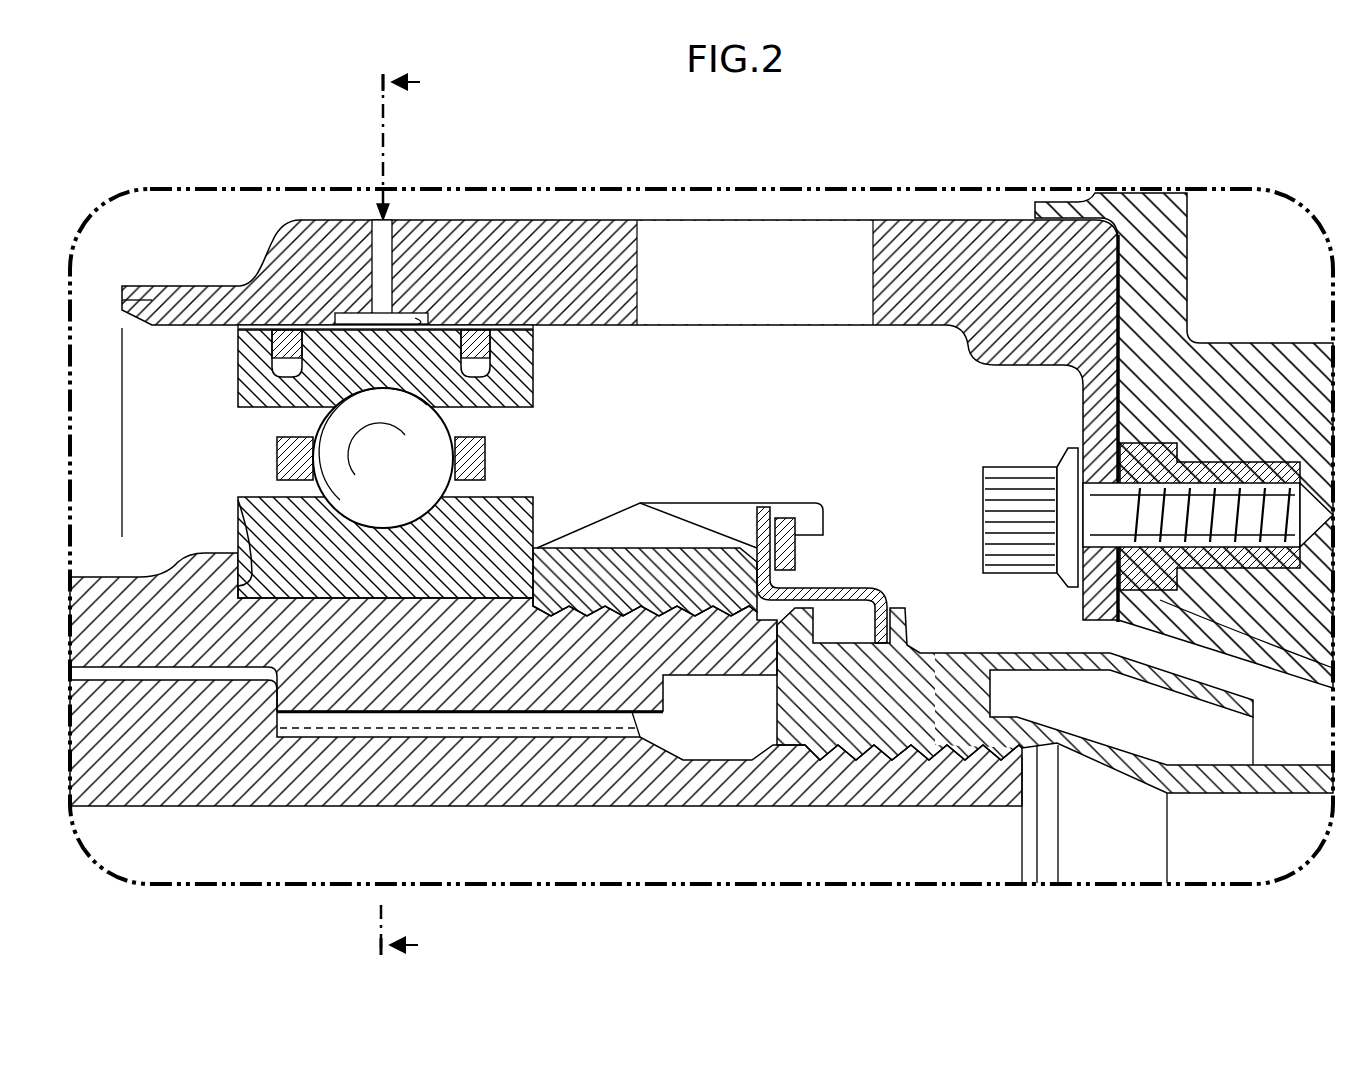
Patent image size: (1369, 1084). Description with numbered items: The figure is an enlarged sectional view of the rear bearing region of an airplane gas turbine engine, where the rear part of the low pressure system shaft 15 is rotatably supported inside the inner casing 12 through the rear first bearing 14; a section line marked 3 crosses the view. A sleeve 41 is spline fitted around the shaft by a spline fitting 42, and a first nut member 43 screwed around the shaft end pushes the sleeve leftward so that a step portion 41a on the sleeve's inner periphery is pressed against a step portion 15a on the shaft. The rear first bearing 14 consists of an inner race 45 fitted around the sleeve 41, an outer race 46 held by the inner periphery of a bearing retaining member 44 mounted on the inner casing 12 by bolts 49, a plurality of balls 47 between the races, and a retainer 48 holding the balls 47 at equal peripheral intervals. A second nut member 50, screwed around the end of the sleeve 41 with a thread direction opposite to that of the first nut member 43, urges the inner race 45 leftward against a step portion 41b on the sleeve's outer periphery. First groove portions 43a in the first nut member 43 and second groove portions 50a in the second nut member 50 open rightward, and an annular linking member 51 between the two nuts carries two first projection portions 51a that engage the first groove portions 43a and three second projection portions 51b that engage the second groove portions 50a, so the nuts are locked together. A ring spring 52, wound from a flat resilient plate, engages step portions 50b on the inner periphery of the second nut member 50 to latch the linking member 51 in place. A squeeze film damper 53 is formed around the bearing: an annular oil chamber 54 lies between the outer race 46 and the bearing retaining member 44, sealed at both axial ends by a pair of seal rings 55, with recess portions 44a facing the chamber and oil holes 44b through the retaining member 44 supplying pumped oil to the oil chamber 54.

The section line III-III 3 is at (414, 516).
The inner casing 12 is at (1175, 292).
The rear first bearing 14 is at (421, 371).
The low pressure system shaft 15 is at (528, 814).
The step portion 15a is at (278, 697).
The sleeve 41 is at (138, 574).
The step portion 41a is at (272, 698).
The step portion 41b is at (252, 545).
The spline fitting 42 is at (452, 718).
The first nut member 43 is at (962, 650).
The first groove portions 43a is at (773, 660).
The bearing retaining member 44 is at (542, 212).
The recess portions 44a is at (436, 312).
The oil holes 44b is at (388, 262).
The inner race 45 is at (512, 545).
The outer race 46 is at (515, 390).
The balls 47 is at (394, 476).
The retainer 48 is at (283, 456).
The bolts 49 is at (1010, 478).
The second nut member 50 is at (698, 508).
The second groove portions 50a is at (642, 545).
The step portions 50b is at (786, 540).
The linking member 51 is at (812, 575).
The first projection portions 51a is at (882, 630).
The second projection portions 51b is at (762, 530).
The ring spring 52 is at (792, 518).
The squeeze film damper 53 is at (312, 322).
The oil chamber 54 is at (326, 318).
The seal rings 55 is at (283, 346).